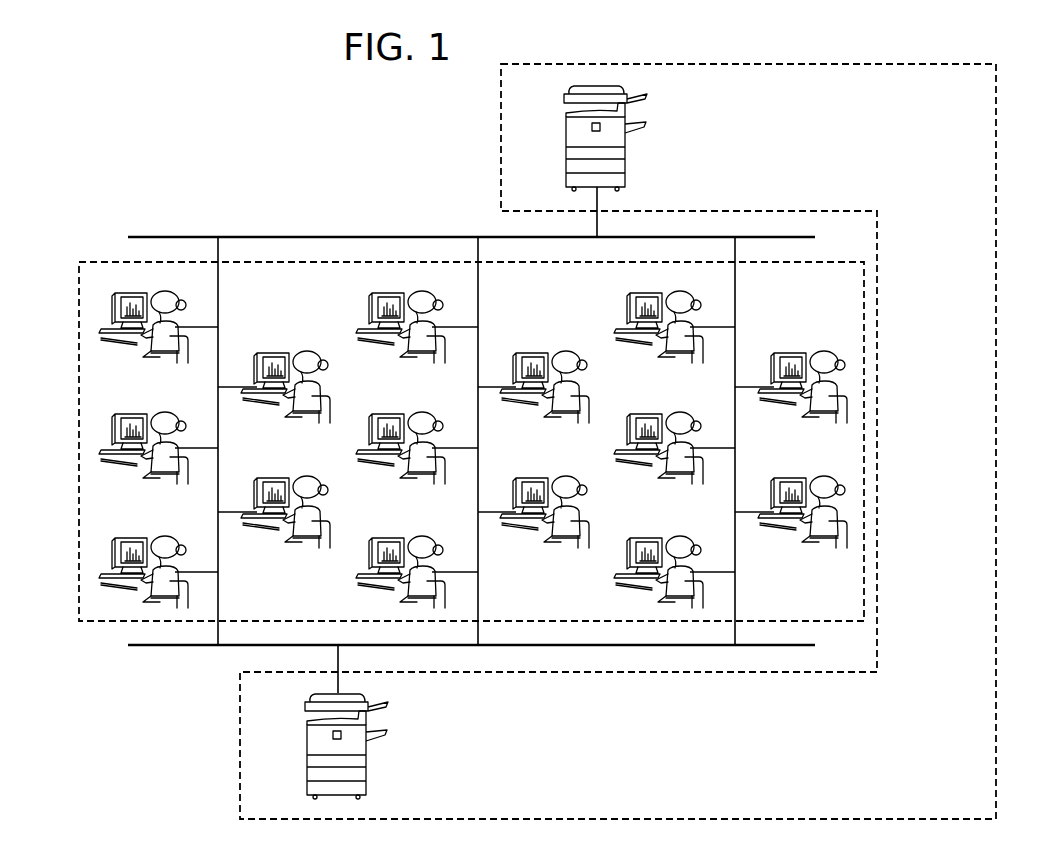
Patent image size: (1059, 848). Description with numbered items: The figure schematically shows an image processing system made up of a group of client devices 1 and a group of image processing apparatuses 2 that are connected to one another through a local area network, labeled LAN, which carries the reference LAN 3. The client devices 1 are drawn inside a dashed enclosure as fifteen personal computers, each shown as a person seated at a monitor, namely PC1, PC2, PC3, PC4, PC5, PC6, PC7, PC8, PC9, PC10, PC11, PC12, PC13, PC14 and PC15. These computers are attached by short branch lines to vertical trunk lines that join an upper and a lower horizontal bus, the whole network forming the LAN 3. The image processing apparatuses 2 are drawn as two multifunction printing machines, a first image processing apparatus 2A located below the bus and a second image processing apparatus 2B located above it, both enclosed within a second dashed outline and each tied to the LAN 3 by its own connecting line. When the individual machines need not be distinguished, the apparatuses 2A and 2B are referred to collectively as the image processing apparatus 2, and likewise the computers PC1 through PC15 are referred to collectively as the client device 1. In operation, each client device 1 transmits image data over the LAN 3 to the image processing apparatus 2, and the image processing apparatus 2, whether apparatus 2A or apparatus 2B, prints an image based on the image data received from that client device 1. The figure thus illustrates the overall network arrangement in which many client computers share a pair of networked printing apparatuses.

The client devices 1 is at (79, 410).
The image processing apparatuses 2 is at (997, 370).
The image processing apparatus 2A is at (307, 749).
The image processing apparatus 2B is at (566, 138).
The LAN 3 is at (191, 647).
The element LAN is at (839, 646).
The client device PC1 is at (158, 560).
The client device PC2 is at (274, 500).
The client device PC3 is at (158, 436).
The client device PC4 is at (274, 375).
The client device PC5 is at (158, 315).
The client device PC6 is at (417, 560).
The client device PC7 is at (533, 500).
The client device PC8 is at (417, 436).
The client device PC9 is at (533, 375).
The client device PC10 is at (417, 315).
The client device PC11 is at (674, 560).
The client device PC12 is at (791, 500).
The client device PC13 is at (674, 436).
The client device PC14 is at (791, 375).
The client device PC15 is at (674, 315).